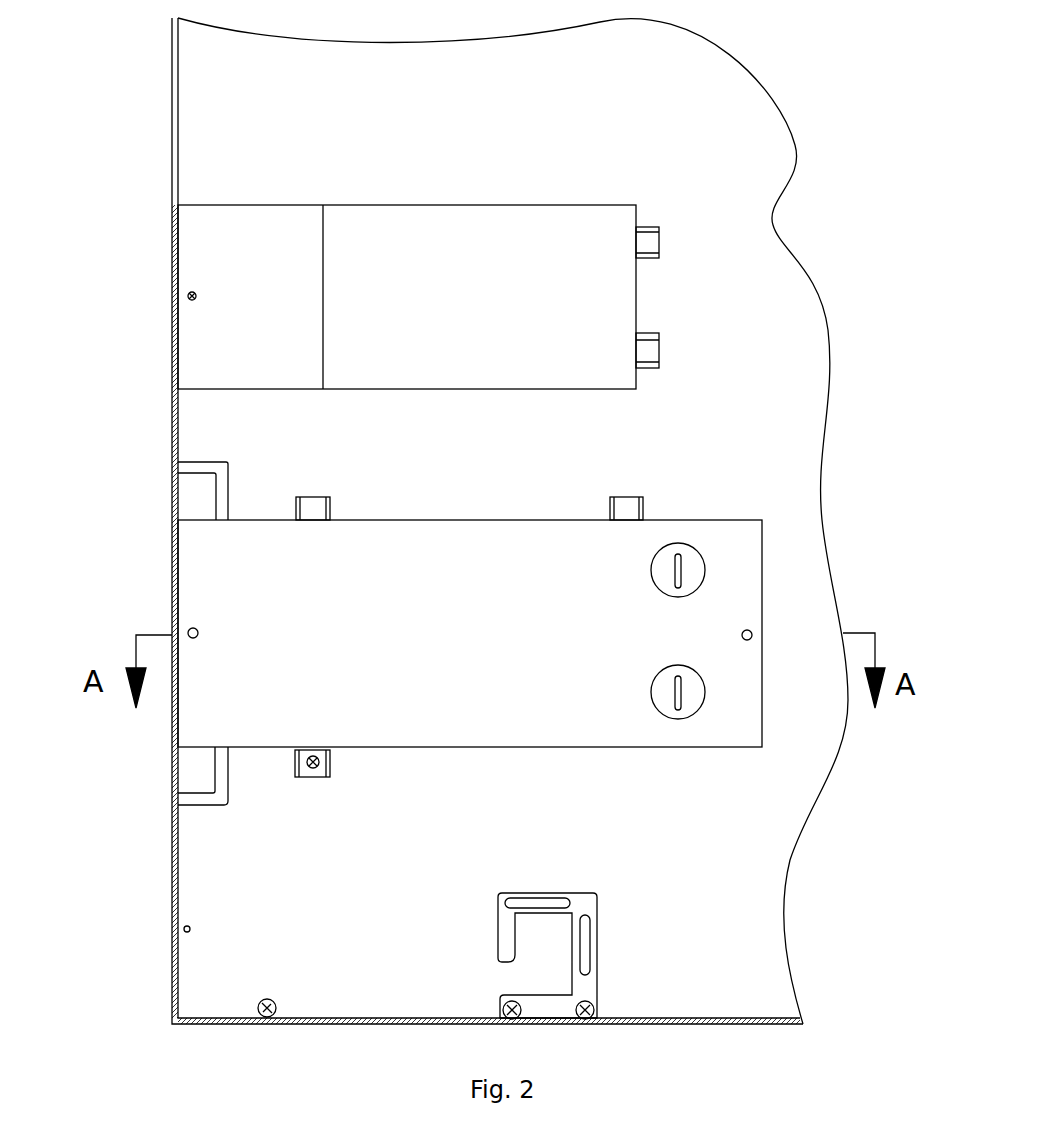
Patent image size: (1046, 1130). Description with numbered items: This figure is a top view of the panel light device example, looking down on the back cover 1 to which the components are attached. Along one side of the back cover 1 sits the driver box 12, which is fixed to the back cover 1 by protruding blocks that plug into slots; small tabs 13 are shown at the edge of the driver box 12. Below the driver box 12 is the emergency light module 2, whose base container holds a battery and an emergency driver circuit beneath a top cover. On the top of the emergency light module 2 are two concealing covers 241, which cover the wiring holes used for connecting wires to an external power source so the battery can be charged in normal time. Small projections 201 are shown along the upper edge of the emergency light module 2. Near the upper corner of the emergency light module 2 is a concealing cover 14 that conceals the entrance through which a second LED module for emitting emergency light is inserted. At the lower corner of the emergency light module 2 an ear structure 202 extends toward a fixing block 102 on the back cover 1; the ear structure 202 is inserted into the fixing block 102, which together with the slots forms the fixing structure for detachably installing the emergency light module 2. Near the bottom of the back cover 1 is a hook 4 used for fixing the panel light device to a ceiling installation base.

The back cover 1 is at (215, 150).
The driver box 12 is at (300, 300).
The connector tabs 13 is at (659, 337).
The concealing cover 14 is at (200, 503).
The emergency light module 2 is at (237, 600).
The mounting tabs 201 is at (326, 506).
The concealing covers 241 is at (700, 688).
The ear structure 202 is at (228, 805).
The fixing block 102 is at (308, 773).
The hook 4 is at (597, 975).